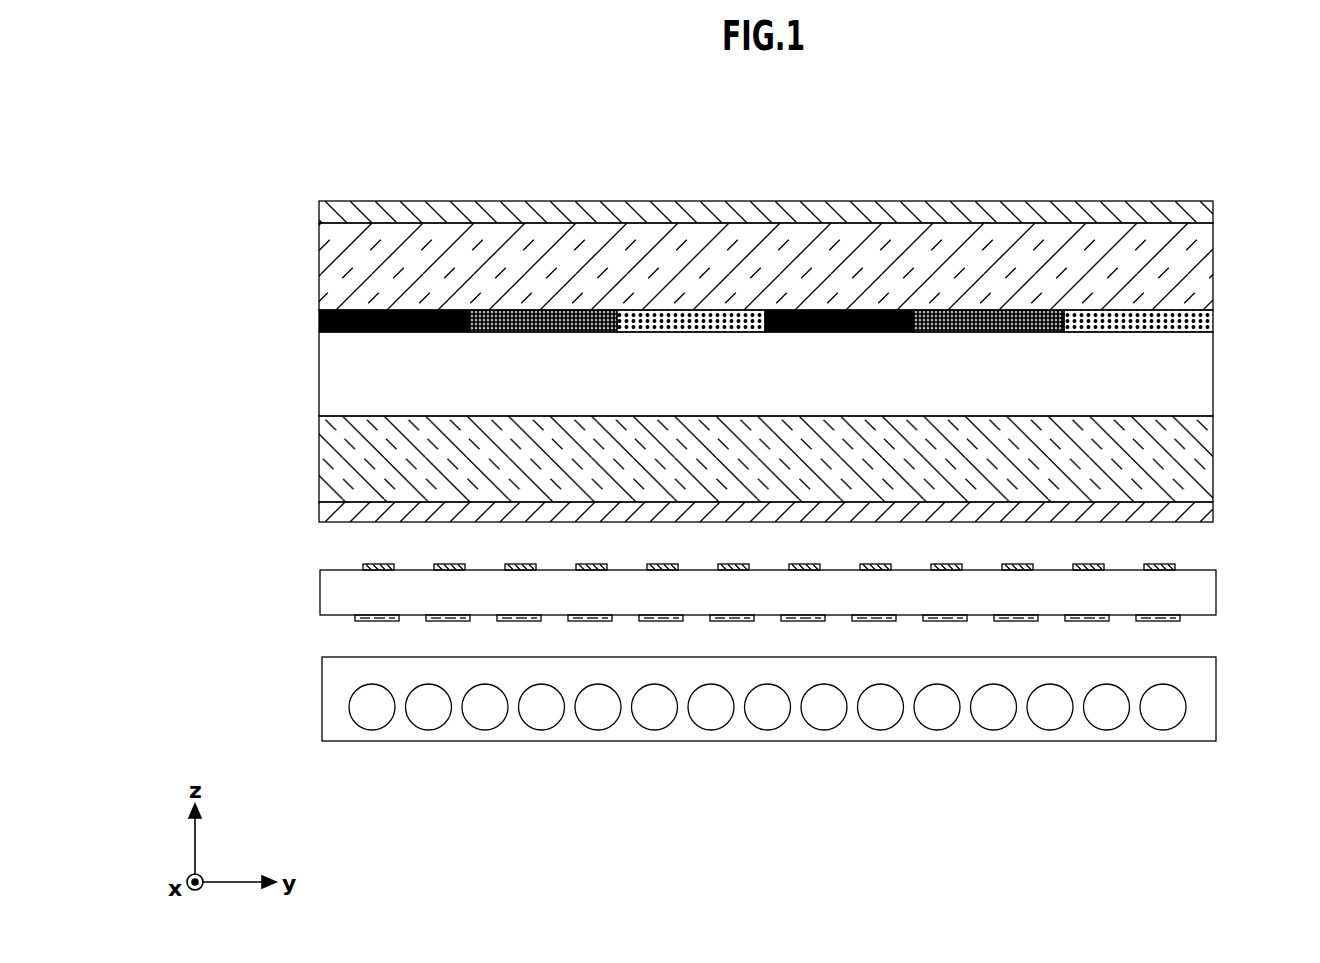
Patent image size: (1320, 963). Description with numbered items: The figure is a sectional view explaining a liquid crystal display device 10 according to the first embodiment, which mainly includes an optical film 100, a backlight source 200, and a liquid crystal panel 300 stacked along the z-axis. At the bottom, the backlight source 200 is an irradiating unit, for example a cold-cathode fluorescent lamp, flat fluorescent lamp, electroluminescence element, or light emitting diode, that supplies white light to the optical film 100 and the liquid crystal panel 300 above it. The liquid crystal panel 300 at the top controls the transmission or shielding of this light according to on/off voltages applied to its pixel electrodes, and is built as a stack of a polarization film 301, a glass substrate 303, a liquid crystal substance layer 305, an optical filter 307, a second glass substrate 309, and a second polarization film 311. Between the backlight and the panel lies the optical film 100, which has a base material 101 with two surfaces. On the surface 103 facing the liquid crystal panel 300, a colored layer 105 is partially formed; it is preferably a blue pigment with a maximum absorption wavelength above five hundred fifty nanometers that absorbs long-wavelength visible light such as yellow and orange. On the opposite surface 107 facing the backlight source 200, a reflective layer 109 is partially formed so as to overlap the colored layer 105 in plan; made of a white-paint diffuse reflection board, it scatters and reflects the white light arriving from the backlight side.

The liquid crystal display device 10 is at (780, 138).
The liquid crystal panel 300 is at (297, 353).
The polarization film 311 is at (1214, 207).
The glass substrate 309 is at (1214, 262).
The optical filter 307 is at (1214, 318).
The liquid crystal substance layer 305 is at (1214, 368).
The glass substrate 303 is at (1214, 456).
The polarization film 301 is at (1214, 510).
The optical film 100 is at (298, 576).
The base material 101 is at (1217, 589).
The surface 103 is at (341, 570).
The colored layer 105 is at (1158, 564).
The surface 107 is at (341, 615).
The reflective layer 109 is at (1160, 622).
The backlight source 200 is at (1217, 696).